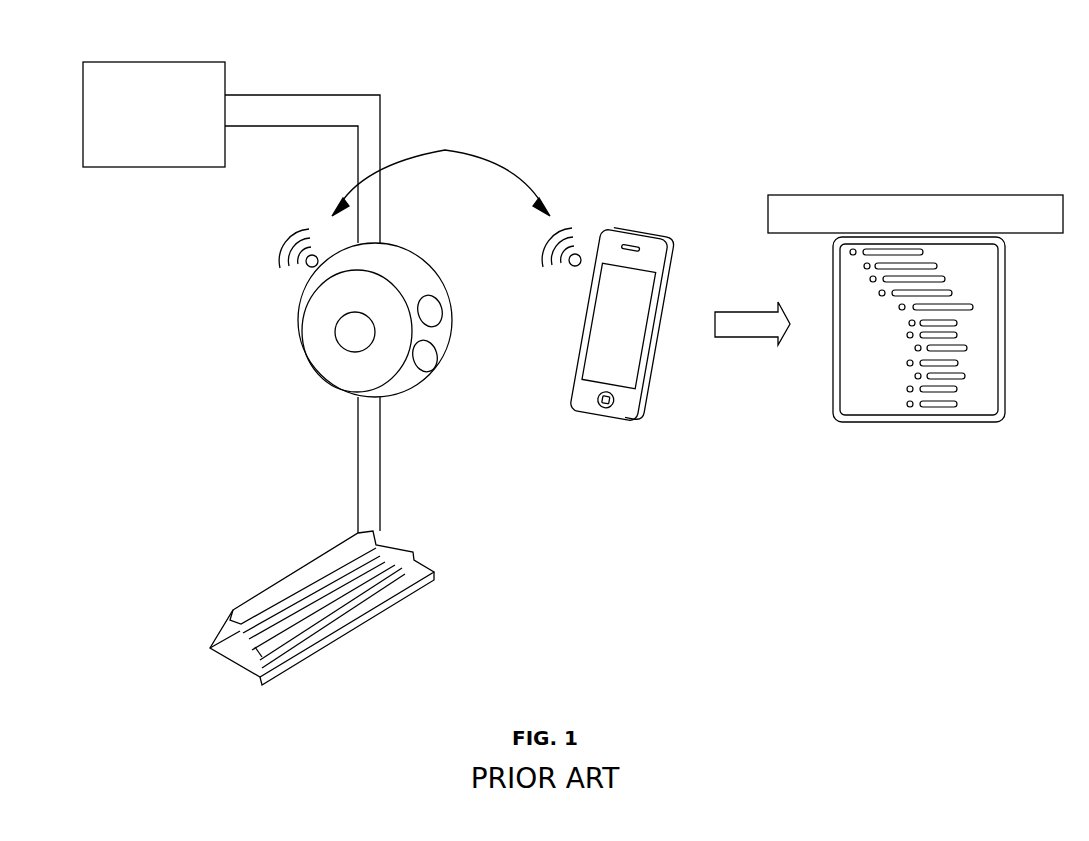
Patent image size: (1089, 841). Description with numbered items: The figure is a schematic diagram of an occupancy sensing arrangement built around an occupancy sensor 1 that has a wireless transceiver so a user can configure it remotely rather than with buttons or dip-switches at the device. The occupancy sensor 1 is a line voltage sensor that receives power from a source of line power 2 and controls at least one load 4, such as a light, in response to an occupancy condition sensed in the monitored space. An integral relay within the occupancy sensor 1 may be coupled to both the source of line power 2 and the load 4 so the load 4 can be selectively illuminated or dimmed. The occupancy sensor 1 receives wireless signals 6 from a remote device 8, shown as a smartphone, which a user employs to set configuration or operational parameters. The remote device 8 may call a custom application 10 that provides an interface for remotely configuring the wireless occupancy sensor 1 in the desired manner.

The occupancy sensor 1 is at (322, 355).
The source of line power 2 is at (208, 73).
The load 4 is at (397, 587).
The wireless signals 6 is at (466, 153).
The remote device 8 is at (630, 405).
The custom application 10 is at (923, 424).